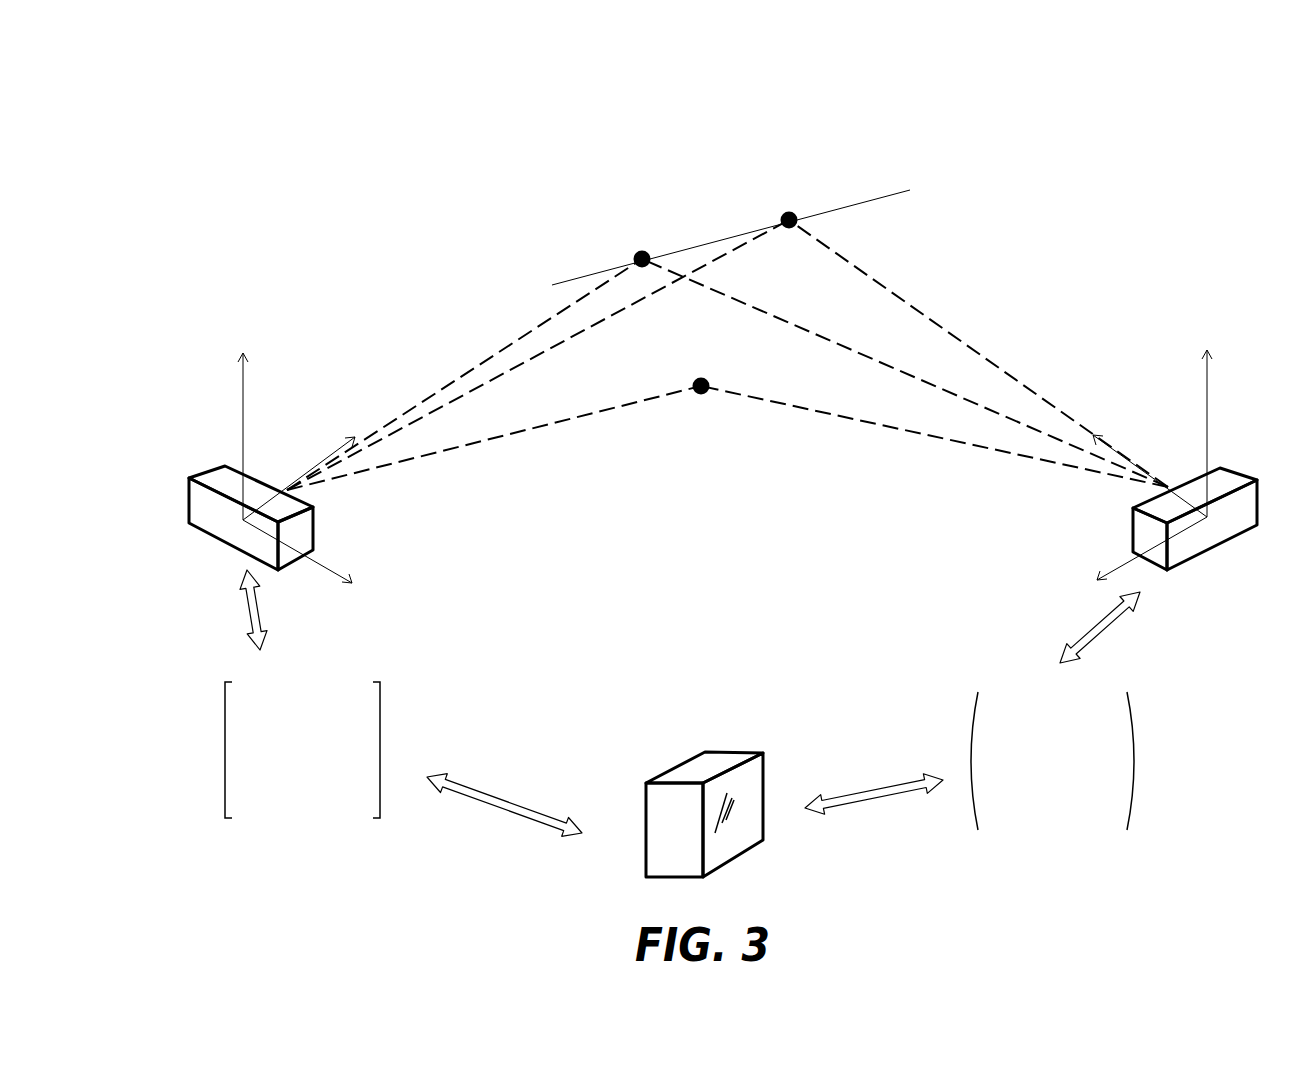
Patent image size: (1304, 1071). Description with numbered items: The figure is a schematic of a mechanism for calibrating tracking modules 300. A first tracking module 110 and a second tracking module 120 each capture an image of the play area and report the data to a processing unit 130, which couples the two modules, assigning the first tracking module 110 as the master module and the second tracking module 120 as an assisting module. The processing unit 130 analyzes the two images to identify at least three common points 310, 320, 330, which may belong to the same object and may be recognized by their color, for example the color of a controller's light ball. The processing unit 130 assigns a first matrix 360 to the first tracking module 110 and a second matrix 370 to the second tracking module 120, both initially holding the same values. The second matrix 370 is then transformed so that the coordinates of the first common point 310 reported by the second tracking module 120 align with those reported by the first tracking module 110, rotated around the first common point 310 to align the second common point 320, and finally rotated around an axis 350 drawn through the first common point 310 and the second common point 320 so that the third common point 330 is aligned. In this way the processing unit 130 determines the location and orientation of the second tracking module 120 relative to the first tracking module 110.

The mechanism for calibrating tracking modules 300 is at (1272, 96).
The first tracking module 110 is at (228, 470).
The second tracking module 120 is at (1217, 480).
The processing unit 130 is at (688, 745).
The first common point 310 is at (640, 248).
The second common point 320 is at (790, 208).
The third common point 330 is at (703, 400).
The axis 350 is at (889, 185).
The first matrix 360 is at (213, 676).
The second matrix 370 is at (1143, 688).